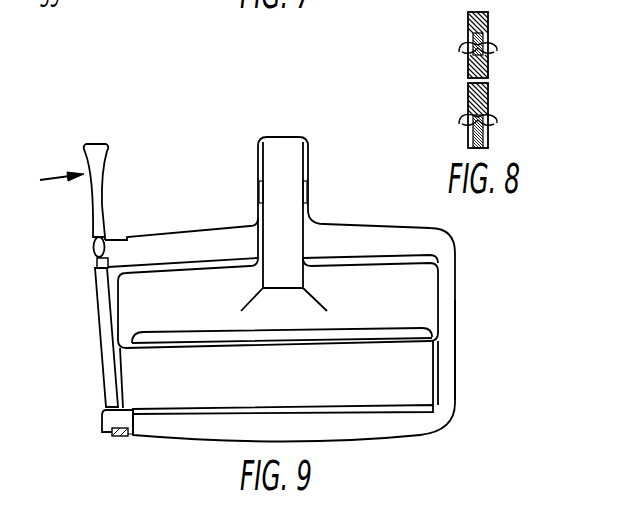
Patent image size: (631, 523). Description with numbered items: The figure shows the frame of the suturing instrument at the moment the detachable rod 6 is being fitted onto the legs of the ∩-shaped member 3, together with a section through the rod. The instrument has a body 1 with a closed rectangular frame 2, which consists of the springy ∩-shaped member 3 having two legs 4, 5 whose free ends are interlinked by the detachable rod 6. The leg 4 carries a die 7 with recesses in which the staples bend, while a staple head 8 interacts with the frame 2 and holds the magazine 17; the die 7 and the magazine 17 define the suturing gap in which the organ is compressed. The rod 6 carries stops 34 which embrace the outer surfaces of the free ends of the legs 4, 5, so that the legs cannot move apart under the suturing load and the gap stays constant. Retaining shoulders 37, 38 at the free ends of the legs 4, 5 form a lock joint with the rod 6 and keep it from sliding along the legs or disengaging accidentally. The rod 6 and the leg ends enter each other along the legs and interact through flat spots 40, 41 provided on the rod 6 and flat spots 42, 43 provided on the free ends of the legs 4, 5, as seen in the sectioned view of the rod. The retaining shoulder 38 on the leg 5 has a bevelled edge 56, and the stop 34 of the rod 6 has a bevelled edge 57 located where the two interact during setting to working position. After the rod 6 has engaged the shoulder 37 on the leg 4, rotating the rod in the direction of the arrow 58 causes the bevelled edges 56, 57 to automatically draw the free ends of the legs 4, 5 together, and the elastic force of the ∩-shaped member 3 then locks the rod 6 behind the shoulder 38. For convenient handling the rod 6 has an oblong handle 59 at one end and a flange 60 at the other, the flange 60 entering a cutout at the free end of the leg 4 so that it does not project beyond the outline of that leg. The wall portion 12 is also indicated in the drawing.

In FIG. 9, the body 1 is at (308, 171).
In FIG. 9, the closed rectangular frame 2 is at (349, 226).
In FIG. 9, the ∩-shaped member 3 is at (455, 353).
In FIG. 9, the leg 4 is at (191, 438).
In FIG. 9, the leg 5 is at (162, 238).
In FIG. 9, the detachable rod 6 is at (103, 360).
In FIG. 9, the die 7 is at (189, 394).
In FIG. 9, the staple head 8 is at (432, 285).
In FIG. 9, the wall section 12 is at (448, 386).
In FIG. 9, the magazine 17 is at (216, 340).
In FIG. 9, the stop 34 is at (94, 248).
In FIG. 9, the retaining shoulder 37 is at (106, 431).
In FIG. 9, the retaining shoulder 38 is at (108, 236).
In FIG. 8, the flat spot 40 is at (468, 120).
In FIG. 8, the flat spot 41 is at (486, 50).
In FIG. 8, the flat spot 42 is at (488, 148).
In FIG. 8, the flat spot 43 is at (470, 24).
In FIG. 9, the bevelled edge 56 is at (98, 263).
In FIG. 9, the bevelled edge 57 is at (99, 238).
In FIG. 9, the arrow 58 is at (61, 197).
In FIG. 9, the oblong handle 59 is at (105, 180).
In FIG. 9, the flange 60 is at (119, 438).